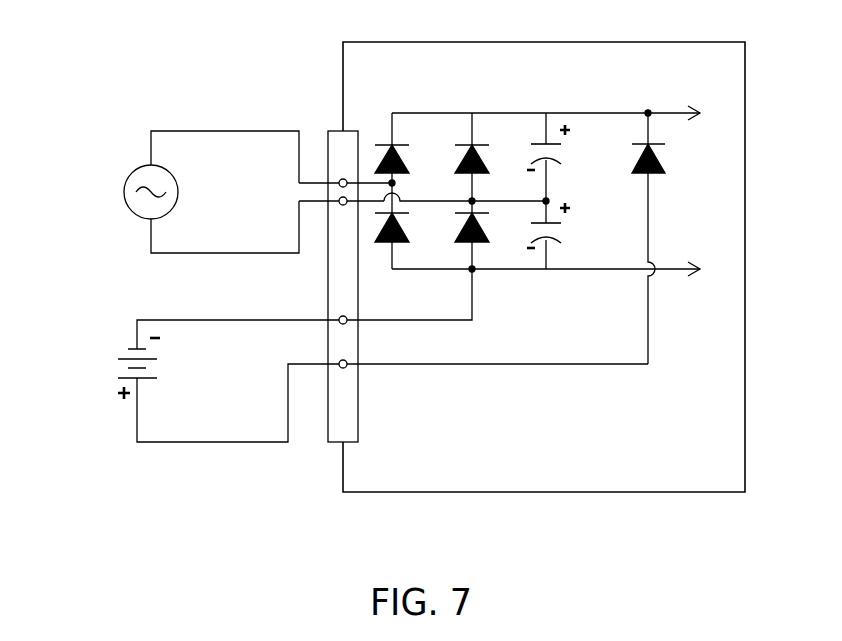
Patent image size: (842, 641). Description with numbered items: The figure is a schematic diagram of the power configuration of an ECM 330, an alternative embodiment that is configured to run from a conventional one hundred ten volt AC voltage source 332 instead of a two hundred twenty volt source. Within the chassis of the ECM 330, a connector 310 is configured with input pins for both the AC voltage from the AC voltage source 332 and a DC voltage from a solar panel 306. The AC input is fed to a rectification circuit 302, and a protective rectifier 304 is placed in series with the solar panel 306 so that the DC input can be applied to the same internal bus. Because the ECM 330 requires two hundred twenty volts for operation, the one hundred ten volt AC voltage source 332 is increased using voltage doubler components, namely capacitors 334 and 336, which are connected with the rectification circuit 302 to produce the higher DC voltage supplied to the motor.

The rectification circuit 302 is at (478, 96).
The protective rectifier 304 is at (666, 166).
The solar panel 306 is at (118, 338).
The connector 310 is at (335, 130).
The ECM 330 is at (745, 193).
The 110 volt AC voltage source 332 is at (137, 175).
The capacitor 334 is at (557, 158).
The capacitor 336 is at (557, 238).